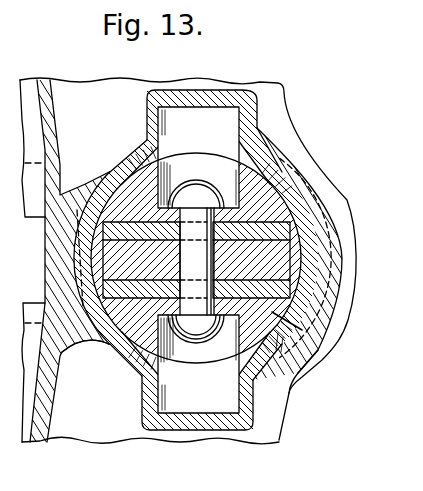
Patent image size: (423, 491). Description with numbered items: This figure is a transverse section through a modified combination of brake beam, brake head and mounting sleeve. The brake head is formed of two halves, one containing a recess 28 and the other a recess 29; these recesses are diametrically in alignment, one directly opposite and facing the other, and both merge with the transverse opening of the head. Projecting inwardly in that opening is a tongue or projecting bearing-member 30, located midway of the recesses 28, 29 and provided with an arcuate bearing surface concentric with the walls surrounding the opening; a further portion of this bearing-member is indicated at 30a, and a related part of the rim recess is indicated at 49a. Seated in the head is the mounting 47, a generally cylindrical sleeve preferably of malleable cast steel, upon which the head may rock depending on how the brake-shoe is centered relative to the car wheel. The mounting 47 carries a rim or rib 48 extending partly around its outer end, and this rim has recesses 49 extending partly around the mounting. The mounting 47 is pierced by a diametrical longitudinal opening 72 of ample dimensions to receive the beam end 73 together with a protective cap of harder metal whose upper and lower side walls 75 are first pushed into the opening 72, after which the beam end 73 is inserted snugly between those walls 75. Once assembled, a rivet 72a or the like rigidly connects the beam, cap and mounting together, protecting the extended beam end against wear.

The recess 28 is at (198, 108).
The recess 29 is at (189, 412).
The tongue or projecting bearing-member 30 is at (298, 357).
The housing bore wall portion 30a is at (101, 324).
The mounting 47 is at (275, 313).
The rim or rib 48 is at (292, 182).
The recesses 49 is at (137, 153).
The sleeve shoulder 49a is at (143, 361).
The diametrical longitudinal opening 72 is at (232, 186).
The rivet 72a is at (203, 186).
The beam end 73 is at (291, 240).
The side walls 75 is at (291, 296).